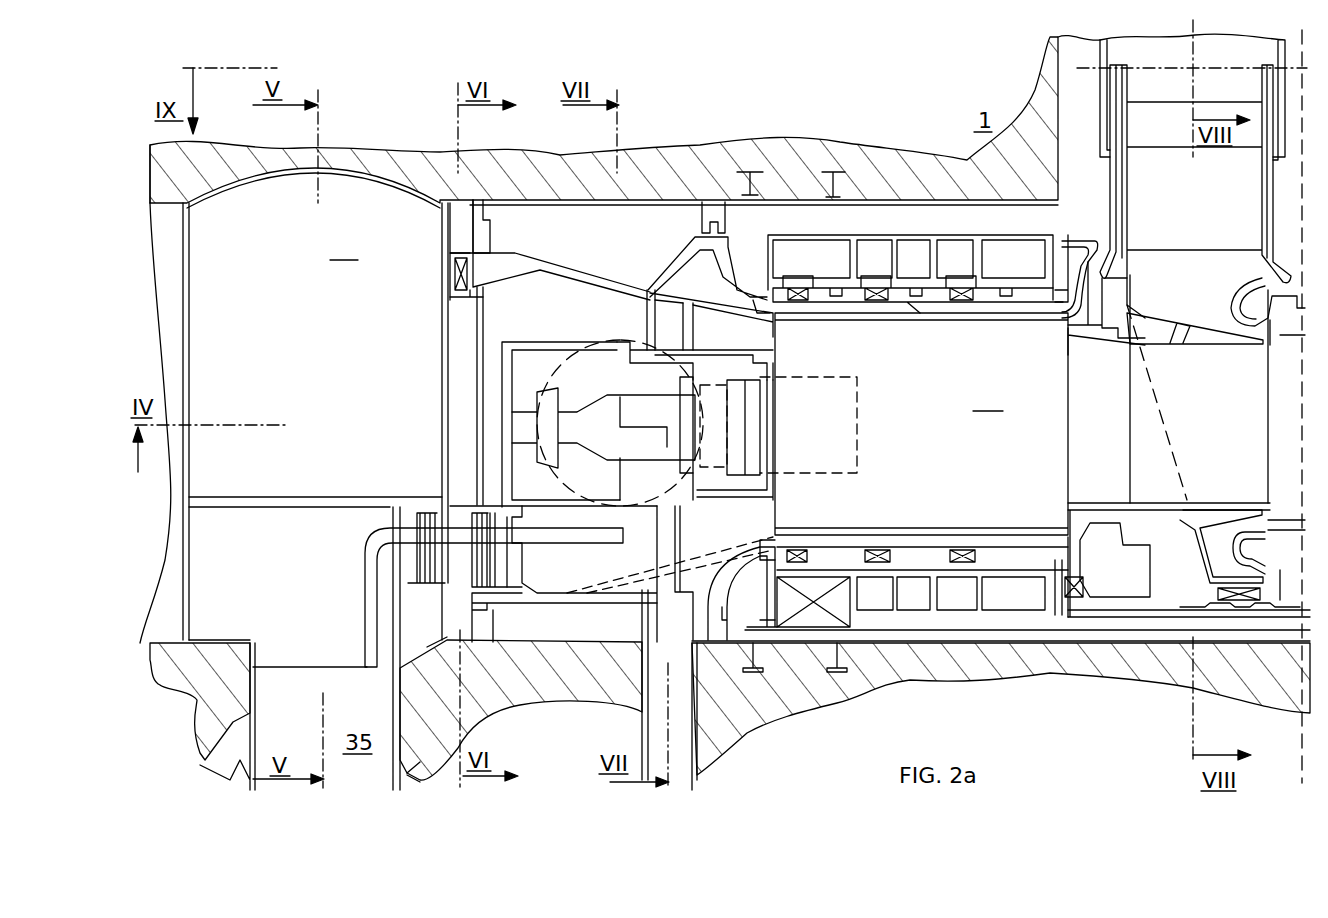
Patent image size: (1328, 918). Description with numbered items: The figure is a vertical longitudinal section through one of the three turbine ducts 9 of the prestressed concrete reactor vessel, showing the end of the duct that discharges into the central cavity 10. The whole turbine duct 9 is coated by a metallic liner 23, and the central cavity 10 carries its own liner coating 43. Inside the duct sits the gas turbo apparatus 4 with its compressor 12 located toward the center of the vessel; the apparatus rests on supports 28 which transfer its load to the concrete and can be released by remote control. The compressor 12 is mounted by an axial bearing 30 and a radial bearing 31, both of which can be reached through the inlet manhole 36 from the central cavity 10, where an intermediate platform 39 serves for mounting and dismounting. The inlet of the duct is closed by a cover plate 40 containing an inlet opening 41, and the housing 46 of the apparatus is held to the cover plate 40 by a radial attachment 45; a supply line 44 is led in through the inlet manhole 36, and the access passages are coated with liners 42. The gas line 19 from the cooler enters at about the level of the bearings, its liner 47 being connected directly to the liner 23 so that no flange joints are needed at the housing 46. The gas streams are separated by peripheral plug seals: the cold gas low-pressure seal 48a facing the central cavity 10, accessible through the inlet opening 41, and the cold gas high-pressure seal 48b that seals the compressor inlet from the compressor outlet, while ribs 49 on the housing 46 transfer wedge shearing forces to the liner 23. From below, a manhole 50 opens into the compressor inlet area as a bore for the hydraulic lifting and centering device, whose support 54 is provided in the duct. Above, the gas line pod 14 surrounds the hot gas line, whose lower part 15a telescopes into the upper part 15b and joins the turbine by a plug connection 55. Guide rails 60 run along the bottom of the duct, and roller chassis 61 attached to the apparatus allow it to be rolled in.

The gas turbo apparatus 4 is at (1127, 493).
The turbine duct 9 is at (593, 192).
The central cavity 10 is at (291, 423).
The compressor 12 is at (921, 424).
The gas line pod 14 is at (1075, 108).
The lower part of the hot gas line 15a is at (1127, 220).
The upper part of the hot gas line 15b is at (1112, 125).
The gas line 19 is at (585, 495).
The metallic liner 23 is at (643, 403).
The supports 28 is at (833, 672).
The axial bearing 30 is at (547, 407).
The radial bearing 31 is at (647, 290).
The inlet manhole 36 is at (458, 577).
The intermediate platform 39 is at (268, 505).
The cover plate 40 is at (452, 232).
The inlet opening 41 is at (442, 357).
The metallic liners 42 is at (252, 722).
The liner coating 43 is at (208, 172).
The supply line 44 is at (370, 618).
The radial attachment 45 is at (455, 270).
The housing 46 is at (497, 267).
The liner 47 is at (1053, 123).
The cold gas low-pressure seal 48a is at (477, 218).
The cold gas high-pressure seal 48b is at (778, 165).
The ribs 49 is at (558, 268).
The manhole 50 is at (697, 722).
The support 54 is at (635, 598).
The plug connection 55 is at (1104, 258).
The guide rails 60 is at (1023, 635).
The roller chassis 61 is at (835, 607).